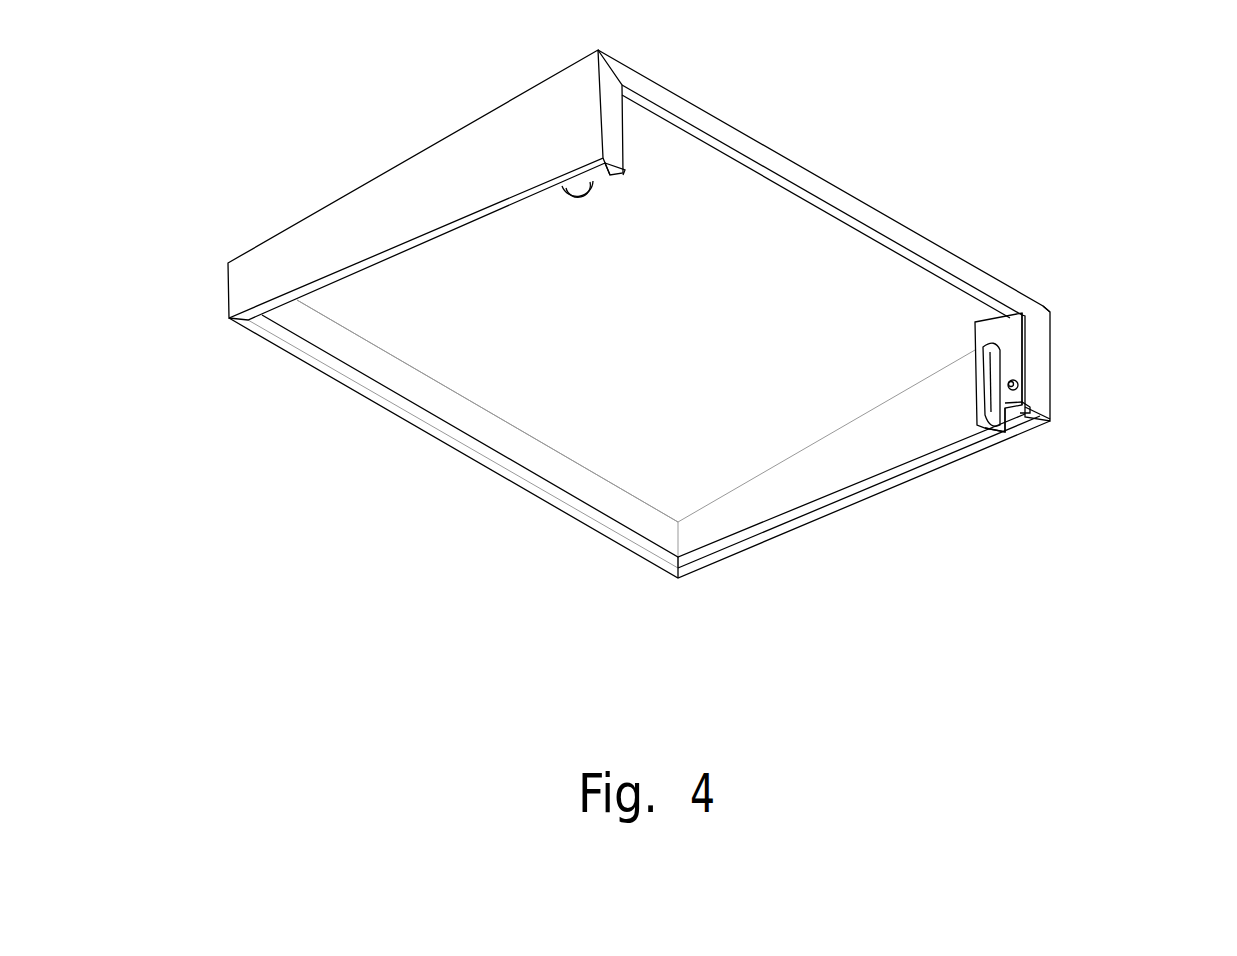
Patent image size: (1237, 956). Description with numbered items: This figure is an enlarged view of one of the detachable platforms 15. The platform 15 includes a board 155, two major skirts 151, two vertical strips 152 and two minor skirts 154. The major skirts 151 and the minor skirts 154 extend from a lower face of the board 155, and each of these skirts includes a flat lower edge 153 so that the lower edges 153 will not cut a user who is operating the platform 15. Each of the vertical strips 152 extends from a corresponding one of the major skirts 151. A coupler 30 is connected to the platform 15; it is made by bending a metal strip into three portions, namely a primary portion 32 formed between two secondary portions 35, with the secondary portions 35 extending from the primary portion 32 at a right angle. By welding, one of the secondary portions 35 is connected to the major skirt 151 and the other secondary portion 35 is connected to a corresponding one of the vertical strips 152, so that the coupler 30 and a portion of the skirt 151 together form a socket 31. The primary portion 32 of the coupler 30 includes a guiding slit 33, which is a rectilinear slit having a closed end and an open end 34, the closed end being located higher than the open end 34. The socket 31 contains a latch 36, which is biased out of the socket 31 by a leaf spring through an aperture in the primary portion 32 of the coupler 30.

The platform 15 is at (701, 339).
The major skirt 151 is at (420, 197).
The vertical strip 152 is at (1040, 374).
The flat lower edge 153 is at (857, 498).
The minor skirt 154 is at (757, 152).
The board 155 is at (596, 410).
The coupler 30 is at (847, 344).
The socket 31 is at (1027, 433).
The primary portion 32 is at (992, 318).
The guiding slit 33 is at (1003, 352).
The open end 34 is at (1010, 430).
The secondary portion 35 is at (988, 432).
The latch 36 is at (1019, 385).